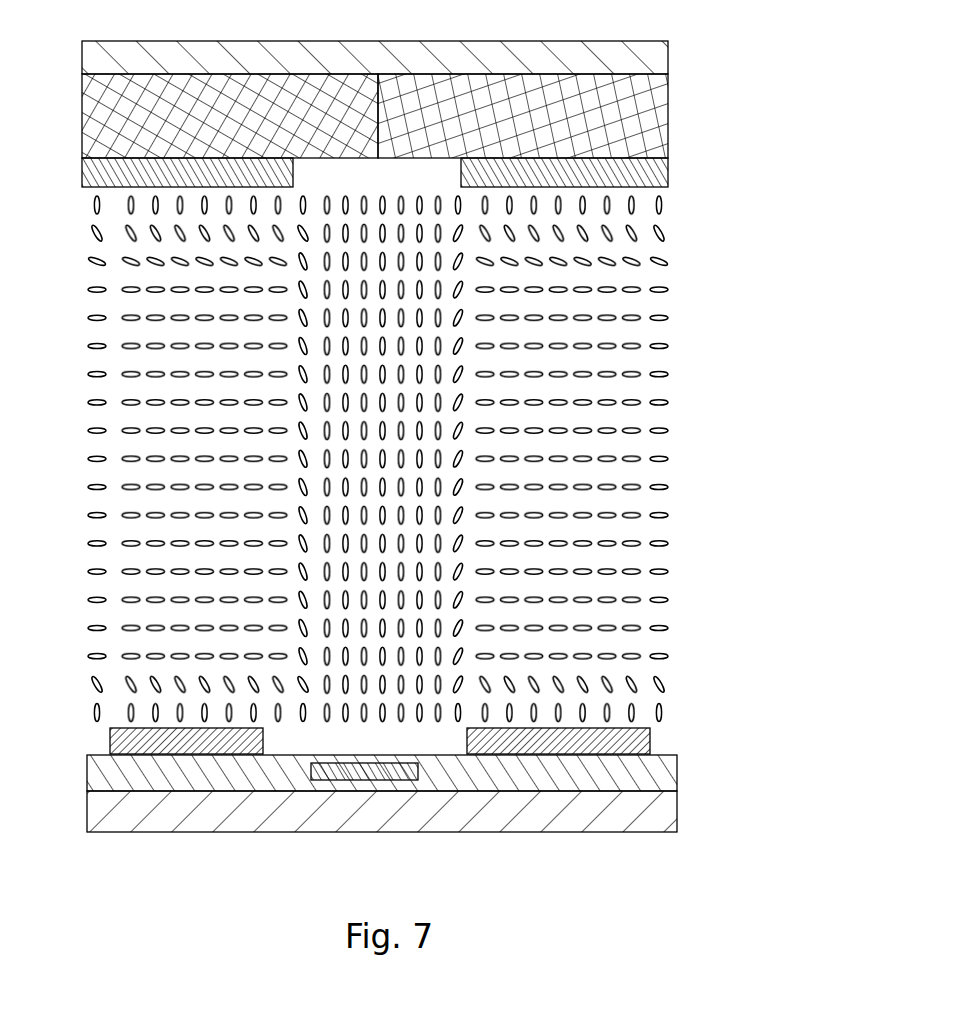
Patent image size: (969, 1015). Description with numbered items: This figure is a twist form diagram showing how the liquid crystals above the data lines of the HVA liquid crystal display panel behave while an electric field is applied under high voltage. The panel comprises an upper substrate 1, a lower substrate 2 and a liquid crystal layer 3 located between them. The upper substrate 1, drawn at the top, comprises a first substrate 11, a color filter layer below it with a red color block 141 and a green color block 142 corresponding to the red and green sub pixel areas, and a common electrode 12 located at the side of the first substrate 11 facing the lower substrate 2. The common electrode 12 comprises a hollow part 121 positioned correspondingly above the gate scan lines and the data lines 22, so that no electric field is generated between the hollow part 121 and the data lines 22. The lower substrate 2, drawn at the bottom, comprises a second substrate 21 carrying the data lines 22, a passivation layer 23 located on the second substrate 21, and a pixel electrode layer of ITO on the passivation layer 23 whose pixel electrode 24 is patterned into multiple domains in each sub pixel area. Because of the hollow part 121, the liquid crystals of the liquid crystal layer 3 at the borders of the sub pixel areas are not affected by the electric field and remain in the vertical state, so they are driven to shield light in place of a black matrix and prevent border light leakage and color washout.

The upper substrate 1 is at (52, 42).
The first substrate 11 is at (528, 68).
The green color block 142 is at (537, 125).
The red color block 141 is at (492, 157).
The common electrode 12 is at (533, 182).
The hollow part 121 is at (383, 183).
The liquid crystal layer 3 is at (540, 433).
The lower substrate 2 is at (55, 726).
The pixel electrode 24 is at (560, 736).
The data lines 22 is at (367, 779).
The passivation layer 23 is at (573, 783).
The second substrate 21 is at (582, 819).